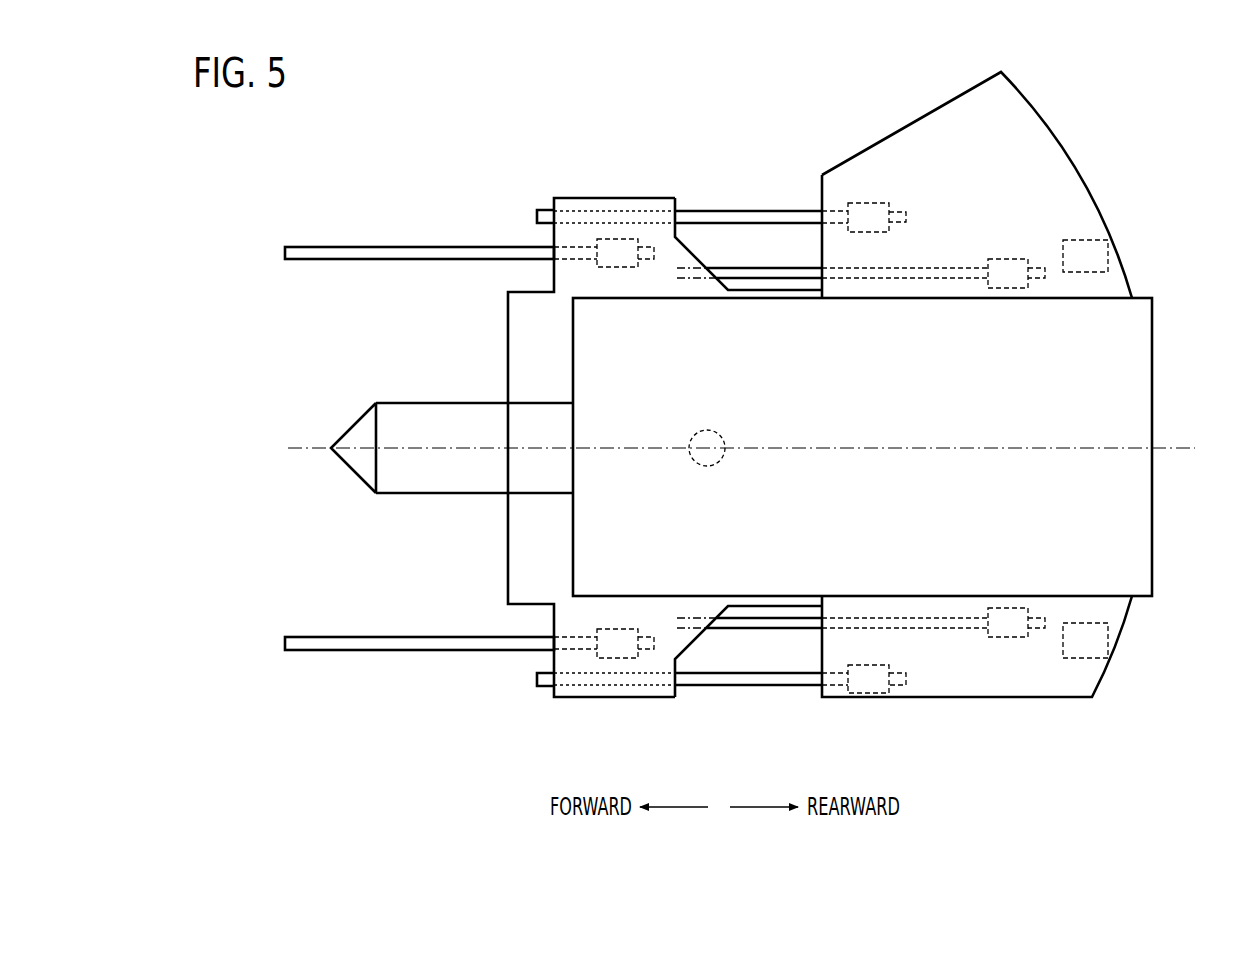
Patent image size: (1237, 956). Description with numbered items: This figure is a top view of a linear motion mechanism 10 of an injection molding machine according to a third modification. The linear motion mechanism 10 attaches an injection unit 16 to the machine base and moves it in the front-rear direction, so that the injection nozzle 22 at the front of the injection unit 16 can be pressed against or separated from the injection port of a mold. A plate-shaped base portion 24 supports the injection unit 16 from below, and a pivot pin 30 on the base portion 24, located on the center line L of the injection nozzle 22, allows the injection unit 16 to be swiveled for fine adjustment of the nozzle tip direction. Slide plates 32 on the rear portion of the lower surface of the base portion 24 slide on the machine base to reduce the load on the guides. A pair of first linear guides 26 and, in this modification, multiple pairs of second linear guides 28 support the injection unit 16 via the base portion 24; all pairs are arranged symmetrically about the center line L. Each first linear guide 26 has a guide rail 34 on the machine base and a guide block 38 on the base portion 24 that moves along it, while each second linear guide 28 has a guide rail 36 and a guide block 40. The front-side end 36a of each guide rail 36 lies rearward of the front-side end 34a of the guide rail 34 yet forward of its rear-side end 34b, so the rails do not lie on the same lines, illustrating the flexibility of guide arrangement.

The linear motion mechanism 10 is at (290, 132).
The injection unit 16 is at (1138, 362).
The injection nozzle 22 is at (359, 427).
The base portion 24 is at (1037, 136).
The first linear guide 26 is at (384, 224).
The second linear guide 28 is at (790, 254).
The pivot pin 30 is at (718, 430).
The slide plate 32 is at (1093, 258).
The guide rail 34 is at (517, 643).
The front-side end 34a is at (285, 247).
The rear-side end 34b is at (653, 257).
The guide rail 36 is at (803, 679).
The front-side end 36a is at (537, 216).
The guide block 38 is at (612, 657).
The guide block 40 is at (870, 683).
The center line L is at (307, 448).